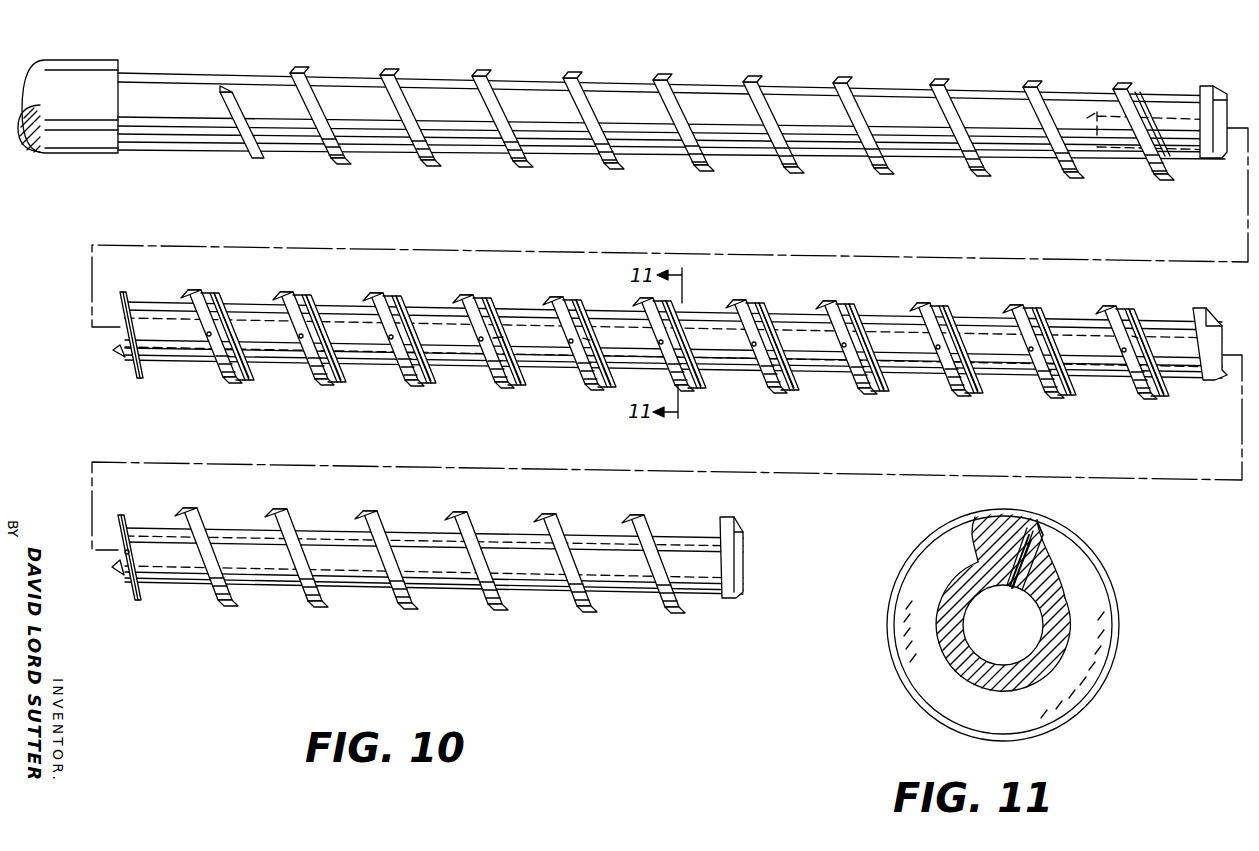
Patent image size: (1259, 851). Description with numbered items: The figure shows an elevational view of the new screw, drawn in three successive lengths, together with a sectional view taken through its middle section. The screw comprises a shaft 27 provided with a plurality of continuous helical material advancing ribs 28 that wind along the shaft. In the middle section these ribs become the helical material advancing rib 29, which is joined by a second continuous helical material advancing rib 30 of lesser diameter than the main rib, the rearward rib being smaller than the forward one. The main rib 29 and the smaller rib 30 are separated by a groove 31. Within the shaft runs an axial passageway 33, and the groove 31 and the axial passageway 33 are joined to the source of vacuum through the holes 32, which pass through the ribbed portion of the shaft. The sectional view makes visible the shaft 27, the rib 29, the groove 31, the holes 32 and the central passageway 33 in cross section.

In FIG. 10, the shaft 27 is at (175, 87).
In FIG. 11, the shaft 27 is at (1097, 637).
In FIG. 10, the continuous helical material advancing ribs 28 is at (567, 70).
In FIG. 10, the helical material advancing rib 29 is at (473, 295).
In FIG. 11, the helical material advancing rib 29 is at (995, 515).
In FIG. 10, the second continuous helical material advancing rib 30 is at (573, 297).
In FIG. 11, the second continuous helical material advancing rib 30 is at (1042, 548).
In FIG. 10, the groove 31 is at (733, 297).
In FIG. 11, the groove 31 is at (1030, 528).
In FIG. 10, the holes 32 is at (1140, 337).
In FIG. 11, the holes 32 is at (1027, 565).
In FIG. 10, the axial passageway 33 is at (683, 557).
In FIG. 11, the axial passageway 33 is at (1013, 627).